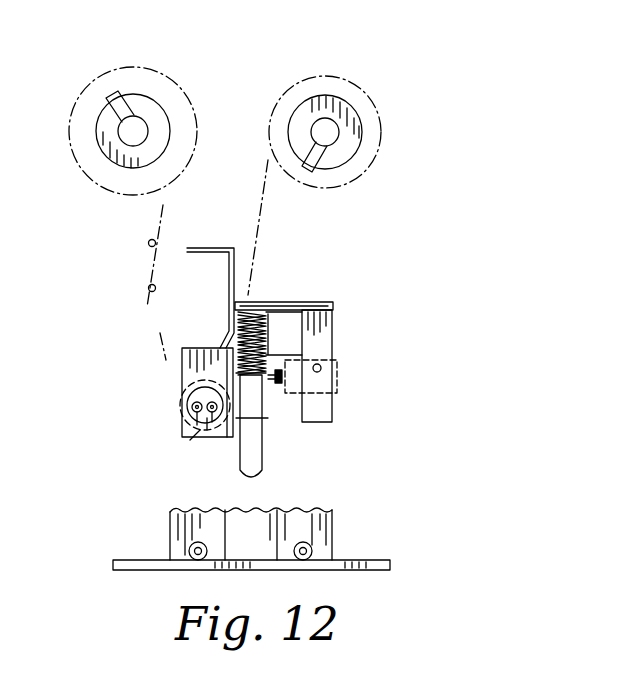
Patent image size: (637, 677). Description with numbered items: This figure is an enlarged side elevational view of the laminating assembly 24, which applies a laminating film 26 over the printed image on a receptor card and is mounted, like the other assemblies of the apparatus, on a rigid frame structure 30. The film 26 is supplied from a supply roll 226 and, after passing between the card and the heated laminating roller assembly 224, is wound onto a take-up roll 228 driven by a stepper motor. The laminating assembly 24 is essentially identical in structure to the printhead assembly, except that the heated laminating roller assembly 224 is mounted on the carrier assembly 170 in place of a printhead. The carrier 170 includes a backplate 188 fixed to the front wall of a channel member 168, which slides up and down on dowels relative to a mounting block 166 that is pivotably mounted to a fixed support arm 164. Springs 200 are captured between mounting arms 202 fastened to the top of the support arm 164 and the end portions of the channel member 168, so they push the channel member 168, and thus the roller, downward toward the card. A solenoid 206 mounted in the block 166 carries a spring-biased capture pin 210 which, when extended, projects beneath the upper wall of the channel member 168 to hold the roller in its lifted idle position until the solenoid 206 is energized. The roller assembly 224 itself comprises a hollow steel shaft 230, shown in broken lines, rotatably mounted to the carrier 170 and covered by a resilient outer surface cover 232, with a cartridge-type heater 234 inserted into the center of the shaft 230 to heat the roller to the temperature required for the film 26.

The laminating roller assembly 24 is at (440, 277).
The laminating film 26 is at (152, 305).
The frame structure 30 is at (333, 547).
The support arm 164 is at (317, 408).
The mounting block 166 is at (292, 352).
The channel member 168 is at (272, 420).
The carrier assembly 170 is at (181, 352).
The backplate 188 is at (209, 247).
The springs 200 is at (272, 337).
The mounting arms 202 is at (268, 302).
The solenoid 206 is at (338, 387).
The capture pin 210 is at (270, 383).
The heated laminating roller assembly 224 is at (181, 425).
The supply roll 226 is at (192, 105).
The take-up roll 228 is at (375, 105).
The hollow steel shaft 230 is at (195, 435).
The resilient outer surface cover 232 is at (180, 408).
The cartridge-type heater 234 is at (207, 430).